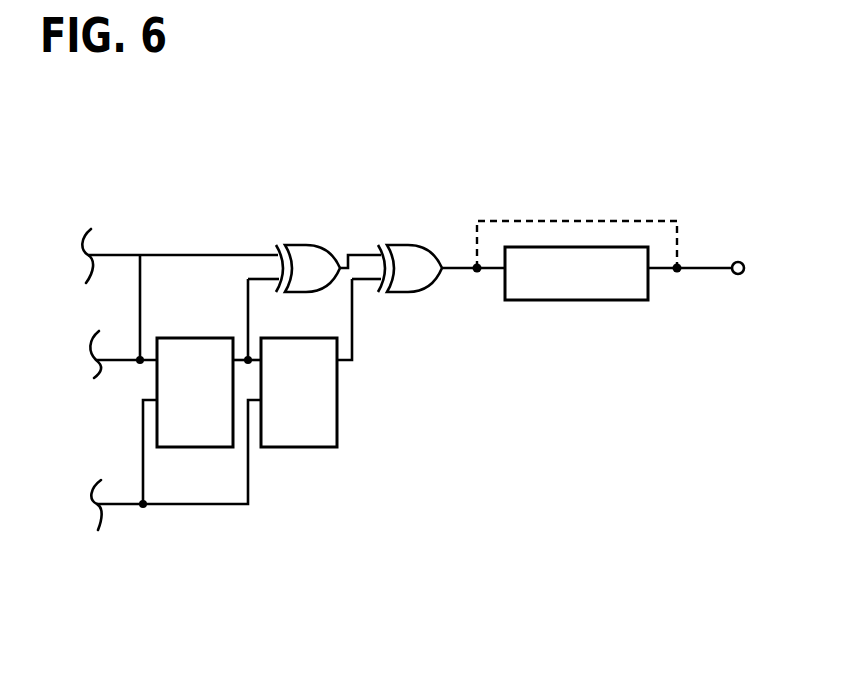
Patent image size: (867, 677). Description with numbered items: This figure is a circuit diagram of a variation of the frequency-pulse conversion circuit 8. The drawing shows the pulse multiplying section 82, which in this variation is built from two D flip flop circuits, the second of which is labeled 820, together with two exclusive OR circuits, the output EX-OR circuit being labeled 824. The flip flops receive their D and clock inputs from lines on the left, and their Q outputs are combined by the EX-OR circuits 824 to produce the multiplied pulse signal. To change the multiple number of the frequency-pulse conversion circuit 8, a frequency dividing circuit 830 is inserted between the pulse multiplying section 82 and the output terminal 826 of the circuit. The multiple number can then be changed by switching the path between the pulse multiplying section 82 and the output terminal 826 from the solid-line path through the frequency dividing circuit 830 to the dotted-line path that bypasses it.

The pulse multiplying section 82 is at (230, 216).
The exclusive OR circuit 824 is at (423, 258).
The frequency-pulse conversion circuit 8 is at (277, 409).
The D flip-flop 820 is at (322, 405).
The frequency dividing circuit 830 is at (587, 300).
The output terminal 826 is at (741, 275).